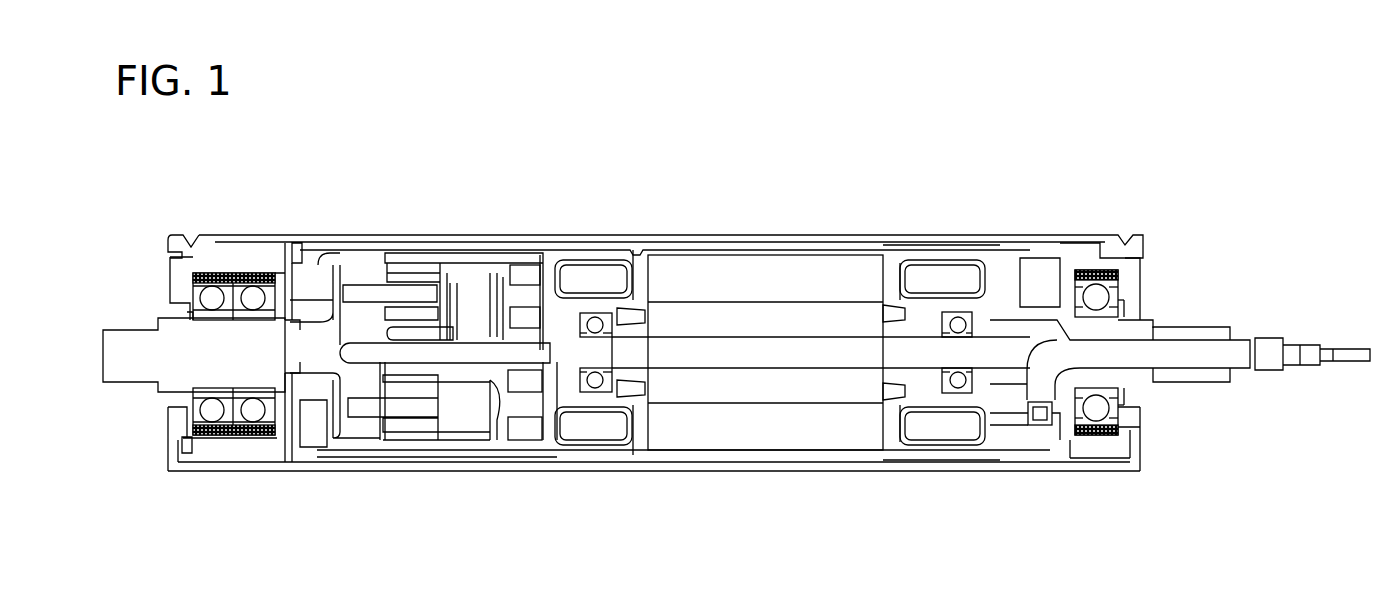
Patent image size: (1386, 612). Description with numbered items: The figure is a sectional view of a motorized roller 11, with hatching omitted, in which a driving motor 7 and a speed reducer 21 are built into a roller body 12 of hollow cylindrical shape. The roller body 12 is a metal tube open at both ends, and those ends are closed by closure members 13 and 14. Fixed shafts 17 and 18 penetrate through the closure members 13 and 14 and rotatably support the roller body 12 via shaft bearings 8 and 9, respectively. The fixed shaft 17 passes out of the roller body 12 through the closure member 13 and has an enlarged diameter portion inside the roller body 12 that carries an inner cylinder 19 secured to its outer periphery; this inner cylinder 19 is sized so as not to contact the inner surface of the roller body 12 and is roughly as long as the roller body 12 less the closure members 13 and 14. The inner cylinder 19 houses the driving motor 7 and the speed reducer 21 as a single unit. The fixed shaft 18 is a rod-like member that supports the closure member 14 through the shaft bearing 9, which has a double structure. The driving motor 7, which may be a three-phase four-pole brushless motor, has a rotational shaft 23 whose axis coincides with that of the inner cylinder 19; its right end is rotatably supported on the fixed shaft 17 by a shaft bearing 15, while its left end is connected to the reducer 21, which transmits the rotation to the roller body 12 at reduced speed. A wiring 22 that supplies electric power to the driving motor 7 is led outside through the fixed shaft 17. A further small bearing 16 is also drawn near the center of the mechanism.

The driving motor 7 is at (848, 280).
The shaft bearing 8 is at (1132, 440).
The shaft bearing 9 is at (225, 280).
The motorized roller 11 is at (1115, 177).
The roller body 12 is at (958, 240).
The closure member 13 is at (1130, 418).
The closure member 14 is at (178, 280).
The shaft bearing 15 is at (955, 390).
The bearing 16 is at (600, 390).
The fixed shaft 17 is at (1197, 327).
The fixed shaft 18 is at (118, 372).
The inner cylinder 19 is at (330, 252).
The speed reducer 21 is at (468, 283).
The wiring 22 is at (1318, 362).
The rotational shaft 23 is at (601, 333).